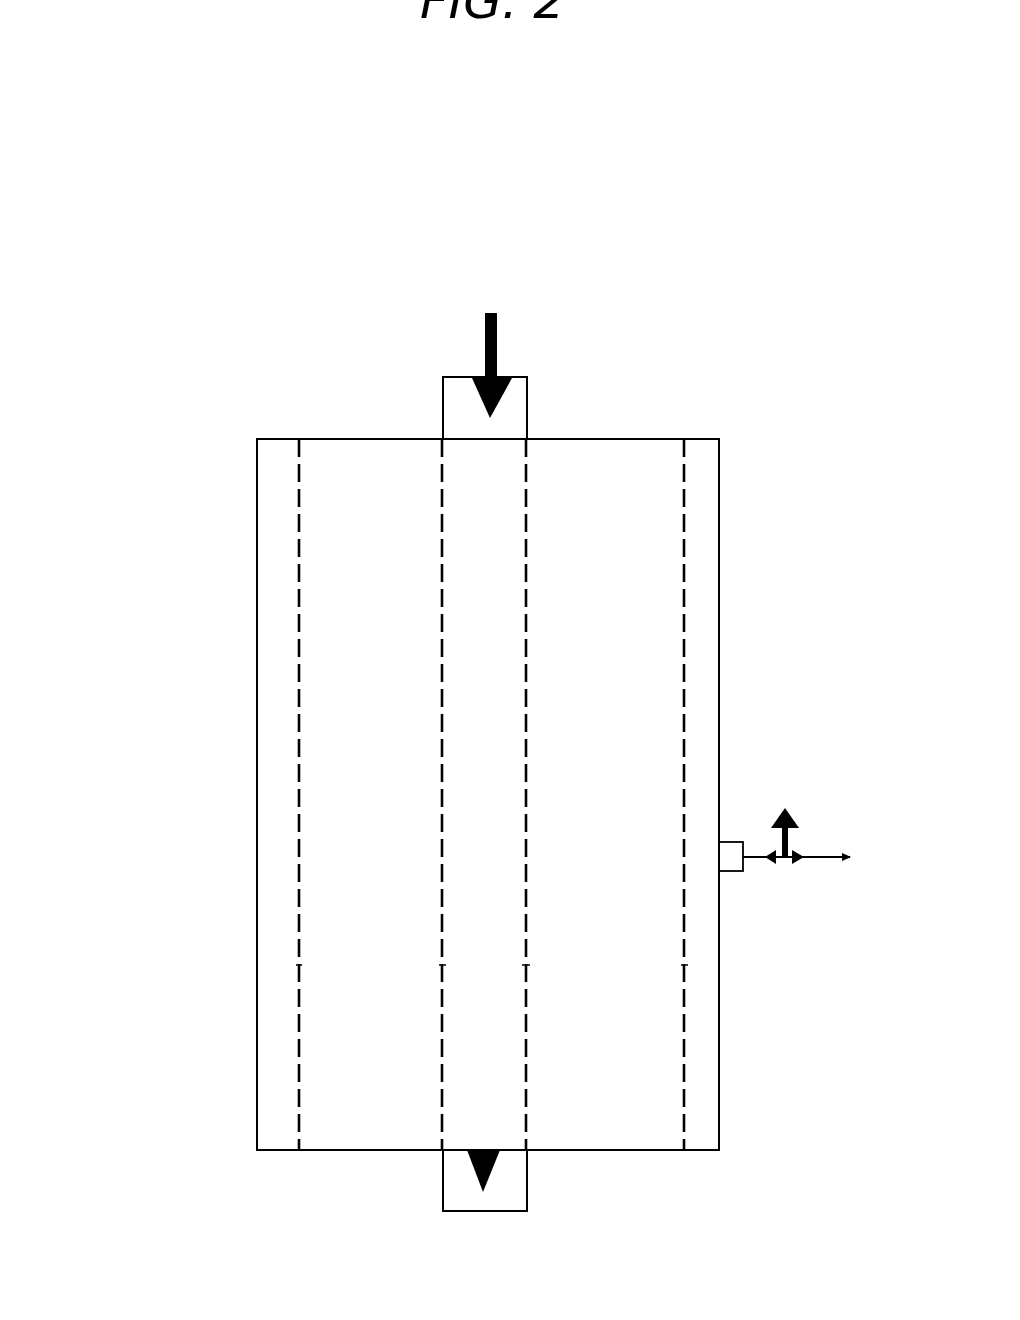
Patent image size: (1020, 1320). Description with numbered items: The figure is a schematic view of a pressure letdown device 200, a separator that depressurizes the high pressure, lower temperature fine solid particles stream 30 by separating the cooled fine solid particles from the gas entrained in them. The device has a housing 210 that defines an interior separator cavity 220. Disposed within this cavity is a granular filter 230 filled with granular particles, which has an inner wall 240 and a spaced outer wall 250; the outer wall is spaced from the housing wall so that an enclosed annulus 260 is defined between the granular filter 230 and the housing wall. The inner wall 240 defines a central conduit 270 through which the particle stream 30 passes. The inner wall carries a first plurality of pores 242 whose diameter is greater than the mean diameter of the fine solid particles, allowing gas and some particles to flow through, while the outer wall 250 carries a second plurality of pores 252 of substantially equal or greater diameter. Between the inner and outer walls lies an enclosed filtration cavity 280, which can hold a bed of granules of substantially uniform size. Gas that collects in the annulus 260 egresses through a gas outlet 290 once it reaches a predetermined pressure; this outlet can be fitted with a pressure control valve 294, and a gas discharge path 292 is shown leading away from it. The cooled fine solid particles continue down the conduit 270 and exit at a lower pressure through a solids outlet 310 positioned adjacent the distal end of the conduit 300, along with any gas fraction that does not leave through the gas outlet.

The pressure letdown device 200 is at (207, 425).
The housing 210 is at (645, 433).
The separator cavity 220 is at (340, 508).
The granular filter 230 is at (620, 670).
The inner wall 240 is at (533, 517).
The first plurality of pores 242 is at (532, 612).
The outer wall 250 is at (687, 517).
The second plurality of pores 252 is at (683, 949).
The annulus 260 is at (270, 792).
The conduit 270 is at (455, 627).
The filtration cavity 280 is at (362, 967).
The gas outlet 290 is at (740, 842).
The sensor signal output 292 is at (745, 865).
The pressure control valve 294 is at (800, 848).
The high pressure, lower temperature fine solid particles stream 30 is at (487, 415).
The distal end of the conduit 300 is at (430, 1152).
The solids outlet 310 is at (490, 1175).